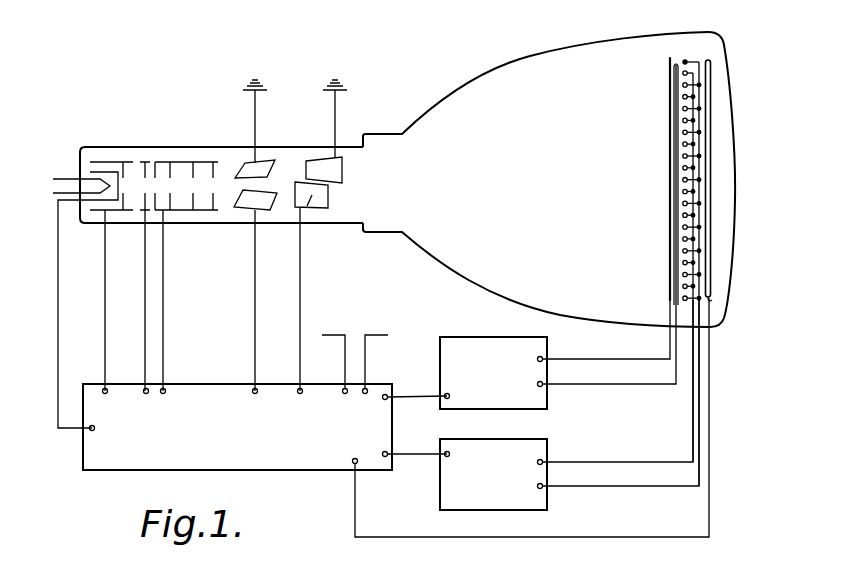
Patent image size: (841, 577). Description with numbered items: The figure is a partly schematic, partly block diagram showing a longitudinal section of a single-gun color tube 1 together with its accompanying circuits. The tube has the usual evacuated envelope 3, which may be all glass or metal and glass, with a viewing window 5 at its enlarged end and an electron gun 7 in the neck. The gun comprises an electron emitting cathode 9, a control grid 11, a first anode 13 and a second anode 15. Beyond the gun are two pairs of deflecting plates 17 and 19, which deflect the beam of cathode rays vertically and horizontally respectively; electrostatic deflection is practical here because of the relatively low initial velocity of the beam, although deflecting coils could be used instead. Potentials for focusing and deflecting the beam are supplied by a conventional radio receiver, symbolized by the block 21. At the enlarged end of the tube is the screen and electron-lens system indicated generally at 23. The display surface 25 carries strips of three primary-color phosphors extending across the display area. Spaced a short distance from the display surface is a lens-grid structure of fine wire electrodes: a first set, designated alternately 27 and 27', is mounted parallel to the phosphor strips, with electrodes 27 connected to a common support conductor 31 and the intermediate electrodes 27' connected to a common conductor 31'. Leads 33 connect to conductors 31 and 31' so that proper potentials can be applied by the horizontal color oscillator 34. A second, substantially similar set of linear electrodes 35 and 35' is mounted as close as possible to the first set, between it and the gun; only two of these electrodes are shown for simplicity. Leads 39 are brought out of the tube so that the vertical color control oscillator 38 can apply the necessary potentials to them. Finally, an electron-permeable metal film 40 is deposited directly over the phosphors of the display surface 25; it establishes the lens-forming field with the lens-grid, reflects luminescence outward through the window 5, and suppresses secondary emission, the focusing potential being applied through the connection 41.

The tube 1 is at (508, 189).
The evacuated envelope 3 is at (488, 72).
The viewing window 5 is at (738, 143).
The electron gun 7 is at (182, 162).
The electron emitting cathode 9 is at (92, 172).
The control grid 11 is at (112, 158).
The first anode 13 is at (147, 160).
The second anode 15 is at (187, 212).
The deflecting plates 17 is at (272, 190).
The deflecting plates 19 is at (330, 192).
The radio receiver 21 is at (218, 384).
The screen and electron-lens system 23 is at (665, 183).
The display surface 25 is at (710, 235).
The linear electrodes 27 is at (660, 188).
The intermediate linear electrodes 27' is at (663, 182).
The common support beam or conductor 31 is at (711, 381).
The common conductor 31' is at (721, 393).
The leads 33 is at (598, 486).
The horizontal color oscillator 34 is at (462, 440).
The linear electrodes of second set 35 is at (648, 179).
The linear electrodes of second set 35' is at (651, 184).
The vertical color control oscillator 38 is at (494, 346).
The leads 39 is at (585, 384).
The metal film 40 is at (712, 298).
The connection 41 is at (711, 372).